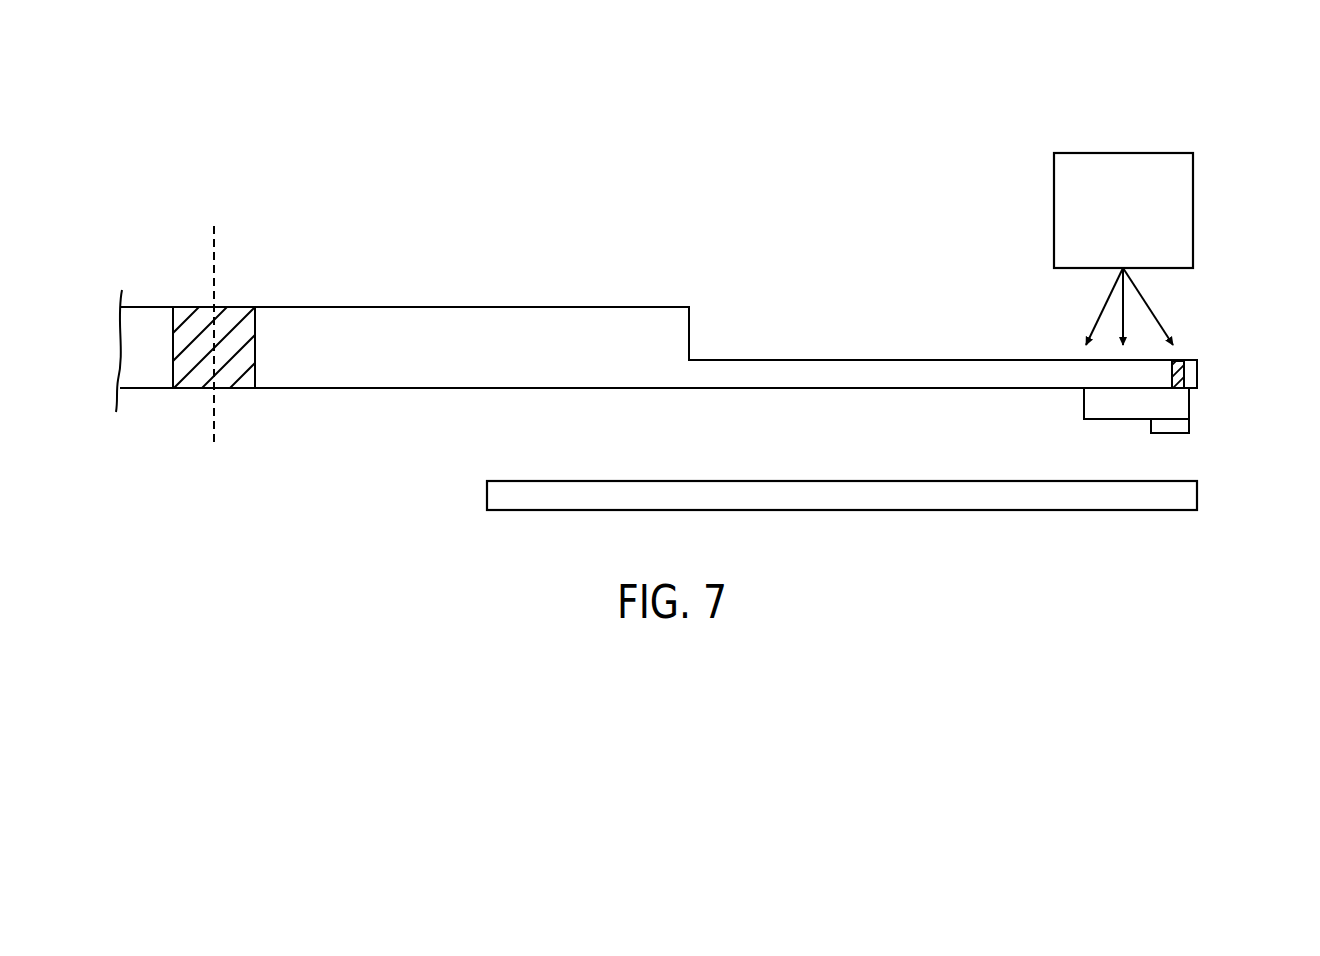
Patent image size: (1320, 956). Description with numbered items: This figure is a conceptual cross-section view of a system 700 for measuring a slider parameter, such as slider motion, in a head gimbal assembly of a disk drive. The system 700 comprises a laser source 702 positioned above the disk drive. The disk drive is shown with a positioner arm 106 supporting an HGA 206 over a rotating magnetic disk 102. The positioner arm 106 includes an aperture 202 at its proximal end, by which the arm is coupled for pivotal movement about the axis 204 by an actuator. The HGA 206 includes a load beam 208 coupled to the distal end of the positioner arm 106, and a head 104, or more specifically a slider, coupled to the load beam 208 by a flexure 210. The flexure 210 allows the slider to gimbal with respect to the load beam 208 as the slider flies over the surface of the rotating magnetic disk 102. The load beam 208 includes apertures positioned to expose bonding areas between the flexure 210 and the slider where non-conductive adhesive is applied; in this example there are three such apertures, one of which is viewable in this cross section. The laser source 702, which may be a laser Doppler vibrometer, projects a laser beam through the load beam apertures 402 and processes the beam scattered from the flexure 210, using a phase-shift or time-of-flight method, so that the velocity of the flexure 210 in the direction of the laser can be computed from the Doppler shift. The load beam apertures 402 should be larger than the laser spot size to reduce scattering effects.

The system 700 is at (1181, 94).
The laser source 702 is at (1193, 212).
The positioner arm 106 is at (400, 312).
The aperture 202 is at (198, 384).
The axis 204 is at (234, 250).
The HGA 206 is at (805, 340).
The load beam 208 is at (933, 373).
The load beam apertures 402 is at (1177, 365).
The flexure 210 is at (1175, 407).
The head 104 is at (1183, 425).
The rotating magnetic disk 102 is at (1197, 490).